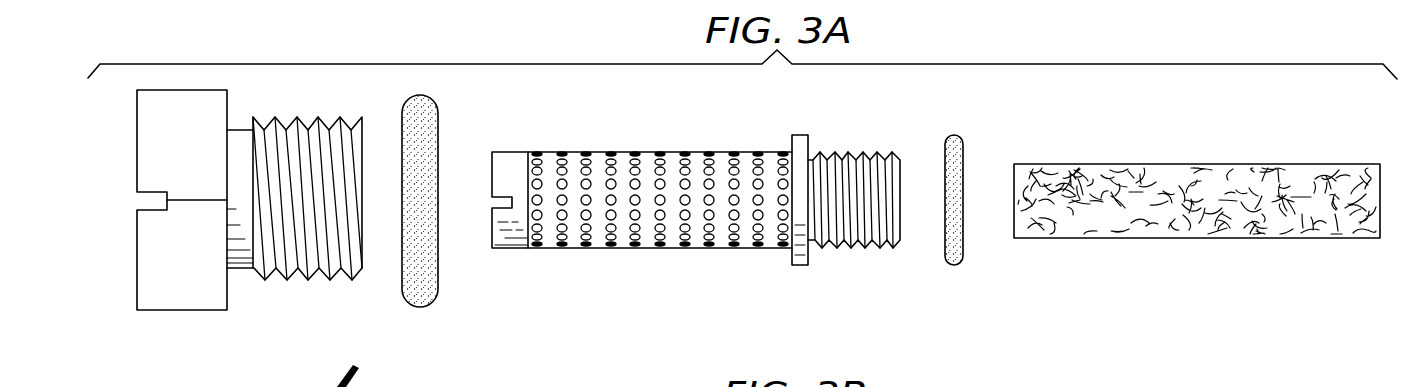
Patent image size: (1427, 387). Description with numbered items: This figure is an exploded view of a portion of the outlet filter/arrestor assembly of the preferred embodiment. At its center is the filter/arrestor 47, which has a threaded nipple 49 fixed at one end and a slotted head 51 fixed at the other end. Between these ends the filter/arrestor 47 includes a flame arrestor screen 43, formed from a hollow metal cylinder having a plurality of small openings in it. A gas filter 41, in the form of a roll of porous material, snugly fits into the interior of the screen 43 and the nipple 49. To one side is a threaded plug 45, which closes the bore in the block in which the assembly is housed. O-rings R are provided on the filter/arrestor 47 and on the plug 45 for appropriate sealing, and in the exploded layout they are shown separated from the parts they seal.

The threaded plug 45 is at (178, 302).
The O-rings R is at (405, 290).
The flame arrestor screen 43 is at (598, 240).
The slotted head 51 is at (505, 240).
The threaded nipple 49 is at (850, 250).
The gas filter 41 is at (1088, 238).
The filter/arrestor 47 is at (1118, 315).